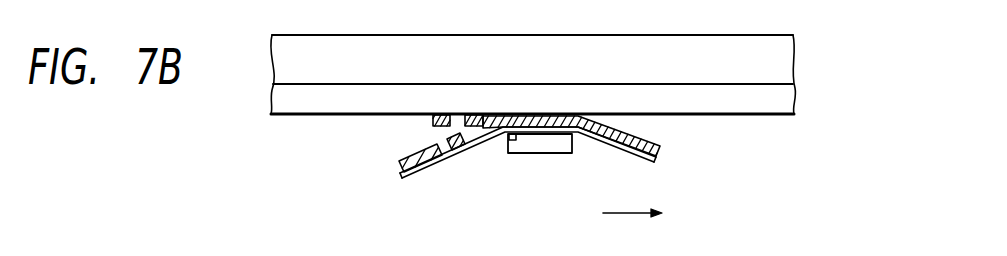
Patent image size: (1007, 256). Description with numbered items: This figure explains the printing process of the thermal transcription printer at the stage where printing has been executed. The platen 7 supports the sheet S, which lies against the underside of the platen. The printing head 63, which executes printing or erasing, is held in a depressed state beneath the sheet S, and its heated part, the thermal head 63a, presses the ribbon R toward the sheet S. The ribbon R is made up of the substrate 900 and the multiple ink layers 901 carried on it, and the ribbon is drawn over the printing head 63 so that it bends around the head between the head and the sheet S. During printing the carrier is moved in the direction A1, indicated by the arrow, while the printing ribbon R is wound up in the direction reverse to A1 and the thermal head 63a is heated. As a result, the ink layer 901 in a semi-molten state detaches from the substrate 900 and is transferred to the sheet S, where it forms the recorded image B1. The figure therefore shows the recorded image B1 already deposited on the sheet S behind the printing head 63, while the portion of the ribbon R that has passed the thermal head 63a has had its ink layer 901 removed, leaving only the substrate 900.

The platen 7 is at (772, 63).
The sheet S is at (775, 102).
The recorded image B1 is at (443, 116).
The ink layers 901 is at (662, 149).
The substrate of ribbon 900 is at (657, 163).
The printing head 63 is at (555, 148).
The thermal head 63a is at (512, 139).
The direction of carrier movement A1 is at (632, 203).
The ribbon R is at (653, 167).